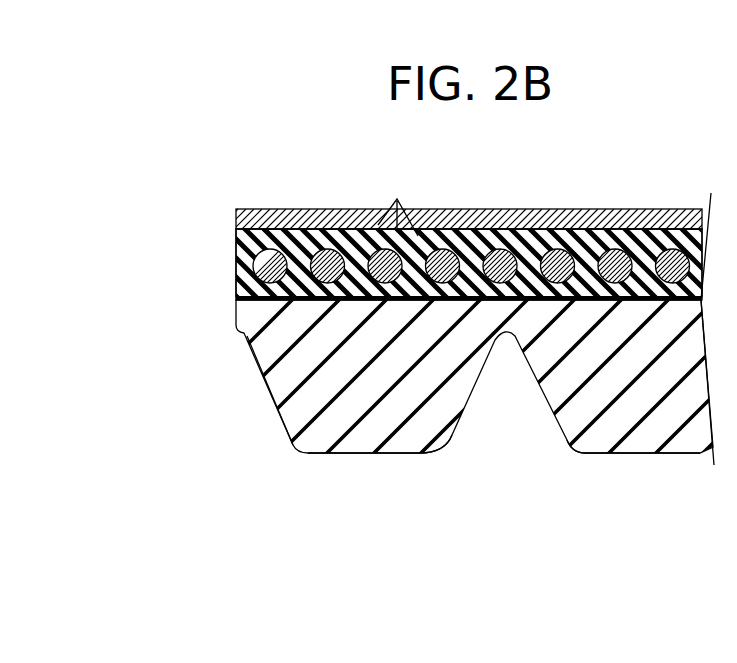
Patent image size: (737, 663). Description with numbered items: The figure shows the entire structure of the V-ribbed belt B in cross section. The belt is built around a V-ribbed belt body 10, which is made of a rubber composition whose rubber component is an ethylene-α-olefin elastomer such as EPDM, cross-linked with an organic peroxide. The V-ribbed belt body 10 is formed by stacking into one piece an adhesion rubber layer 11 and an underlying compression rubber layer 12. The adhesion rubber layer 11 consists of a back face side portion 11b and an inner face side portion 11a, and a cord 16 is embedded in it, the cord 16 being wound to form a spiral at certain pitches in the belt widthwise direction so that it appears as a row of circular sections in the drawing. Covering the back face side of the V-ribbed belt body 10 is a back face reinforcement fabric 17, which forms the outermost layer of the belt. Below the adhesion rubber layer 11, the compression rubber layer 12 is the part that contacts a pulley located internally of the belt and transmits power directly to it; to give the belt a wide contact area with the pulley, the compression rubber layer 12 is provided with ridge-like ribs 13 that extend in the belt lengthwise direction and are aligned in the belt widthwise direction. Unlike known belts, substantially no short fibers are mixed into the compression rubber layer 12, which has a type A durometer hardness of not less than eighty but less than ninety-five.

The V-ribbed belt B is at (604, 185).
The V-ribbed belt body 10 is at (258, 352).
The adhesion rubber layer 11 is at (136, 232).
The inner face side portion of the adhesion rubber layer 11a is at (236, 293).
The back face side portion of the adhesion rubber layer 11b is at (236, 255).
The compression rubber layer 12 is at (297, 419).
The ribs 13 is at (365, 440).
The cord 16 is at (400, 198).
The back face reinforcement fabric 17 is at (236, 220).